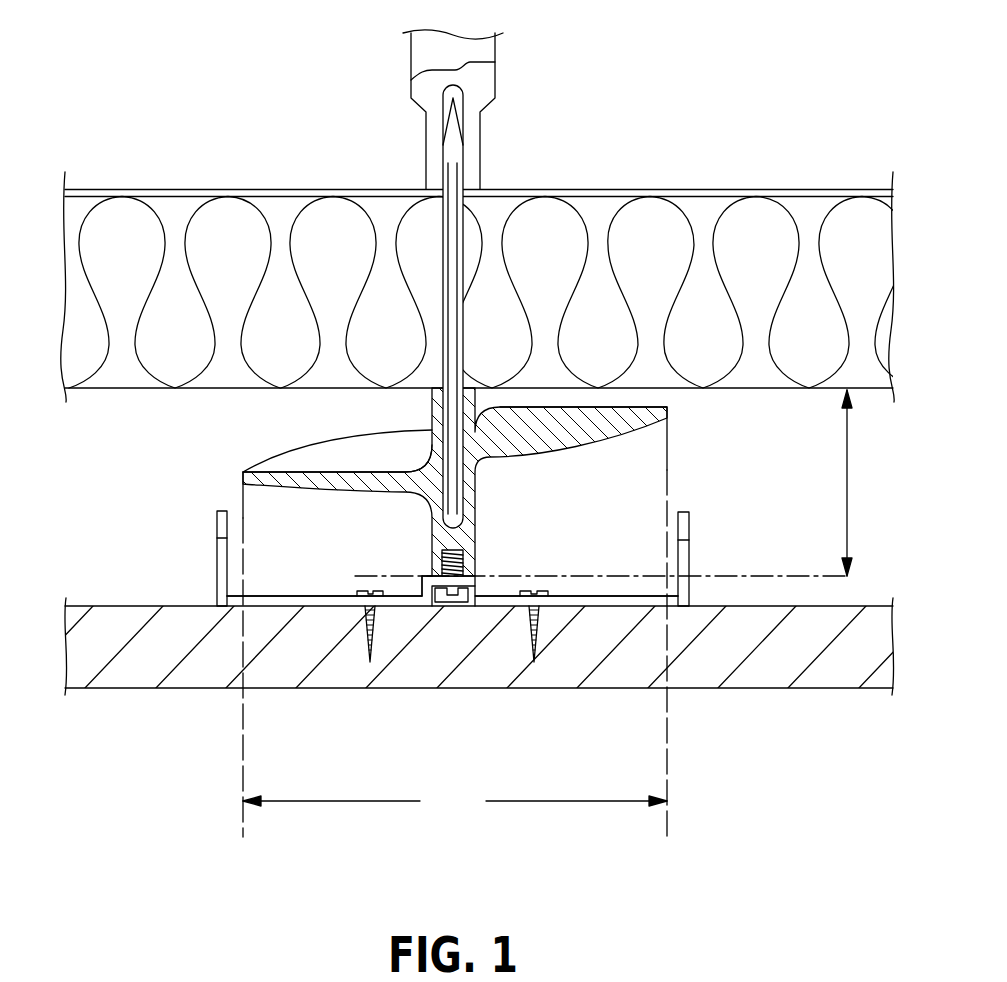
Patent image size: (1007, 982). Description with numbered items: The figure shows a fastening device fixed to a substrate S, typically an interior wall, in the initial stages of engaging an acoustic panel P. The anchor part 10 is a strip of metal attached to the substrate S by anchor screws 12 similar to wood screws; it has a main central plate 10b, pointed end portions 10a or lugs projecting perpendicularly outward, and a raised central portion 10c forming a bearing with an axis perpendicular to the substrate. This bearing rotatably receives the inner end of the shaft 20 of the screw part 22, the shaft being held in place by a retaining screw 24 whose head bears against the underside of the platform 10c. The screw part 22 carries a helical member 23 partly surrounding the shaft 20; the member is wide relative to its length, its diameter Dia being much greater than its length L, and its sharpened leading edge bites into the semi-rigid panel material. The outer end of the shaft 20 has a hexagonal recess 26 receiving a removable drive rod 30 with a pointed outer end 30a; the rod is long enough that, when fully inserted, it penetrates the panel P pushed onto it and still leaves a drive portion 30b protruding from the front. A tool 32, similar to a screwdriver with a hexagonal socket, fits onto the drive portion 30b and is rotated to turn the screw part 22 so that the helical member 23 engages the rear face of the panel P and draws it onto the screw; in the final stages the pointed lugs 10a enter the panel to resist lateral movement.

The tool 32 is at (425, 52).
The drive rod 30 is at (470, 220).
The pointed outer end 30a is at (452, 102).
The drive portion 30b is at (463, 170).
The acoustic panel P is at (710, 188).
The hexagonal recess 26 is at (432, 397).
The screw part 22 is at (610, 465).
The helical member 23 is at (283, 459).
The shaft 20 is at (432, 543).
The retaining screw 24 is at (441, 605).
The anchor part 10 is at (645, 550).
The pointed end portions 10a is at (223, 522).
The main central plate 10b is at (291, 595).
The raised central portion 10c is at (478, 582).
The anchor screws 12 is at (352, 592).
The substrate S is at (193, 690).
The length L is at (847, 483).
The diameter Dia is at (455, 801).